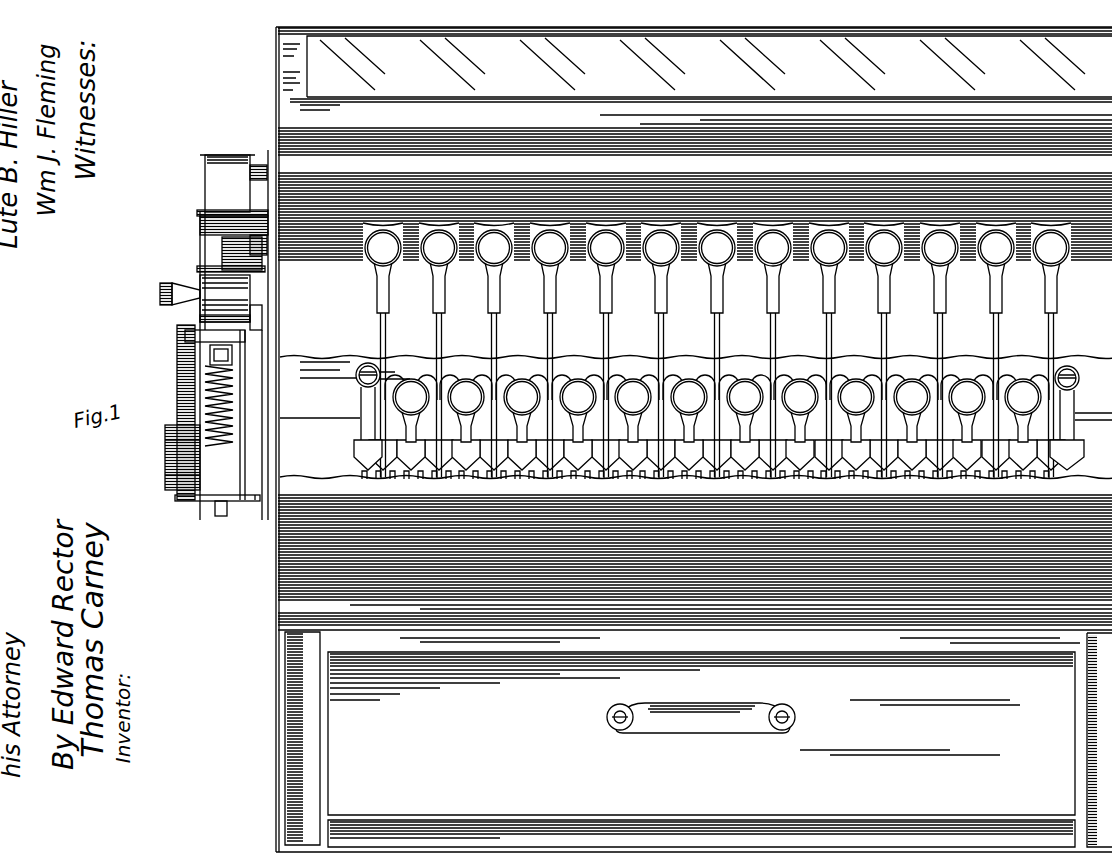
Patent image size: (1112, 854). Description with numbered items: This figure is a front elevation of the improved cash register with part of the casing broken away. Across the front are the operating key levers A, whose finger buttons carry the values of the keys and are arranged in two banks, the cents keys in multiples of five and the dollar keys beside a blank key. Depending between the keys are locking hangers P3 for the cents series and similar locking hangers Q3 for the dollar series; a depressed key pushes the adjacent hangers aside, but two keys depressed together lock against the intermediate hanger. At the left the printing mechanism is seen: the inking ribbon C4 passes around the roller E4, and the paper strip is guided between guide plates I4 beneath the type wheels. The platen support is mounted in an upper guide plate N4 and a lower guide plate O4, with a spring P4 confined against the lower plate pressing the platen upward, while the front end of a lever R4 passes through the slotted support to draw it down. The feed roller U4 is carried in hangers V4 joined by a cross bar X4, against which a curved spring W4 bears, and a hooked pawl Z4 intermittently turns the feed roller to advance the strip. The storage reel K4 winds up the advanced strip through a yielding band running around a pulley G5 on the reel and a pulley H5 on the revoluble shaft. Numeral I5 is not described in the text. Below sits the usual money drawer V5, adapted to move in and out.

The key levers A is at (490, 337).
The locking hangers Q3 is at (488, 455).
The locking hangers P3 is at (594, 457).
The money drawer V5 is at (727, 718).
The roller E4 is at (205, 168).
The hangers V4 is at (246, 212).
The cross bar X4 is at (234, 225).
The inking ribbon C4 is at (222, 248).
The guide plates I4 is at (200, 278).
The curved spring W4 is at (178, 290).
The feed roller U4 is at (225, 298).
The hooked pawl Z4 is at (262, 320).
The upper guide plate N4 is at (185, 336).
The lever R4 is at (225, 356).
The pulley H5 is at (177, 352).
The pin I5 is at (210, 372).
The spring P4 is at (205, 397).
The pulley G5 is at (165, 455).
The storage reel K4 is at (200, 512).
The lower guide plate O4 is at (255, 500).